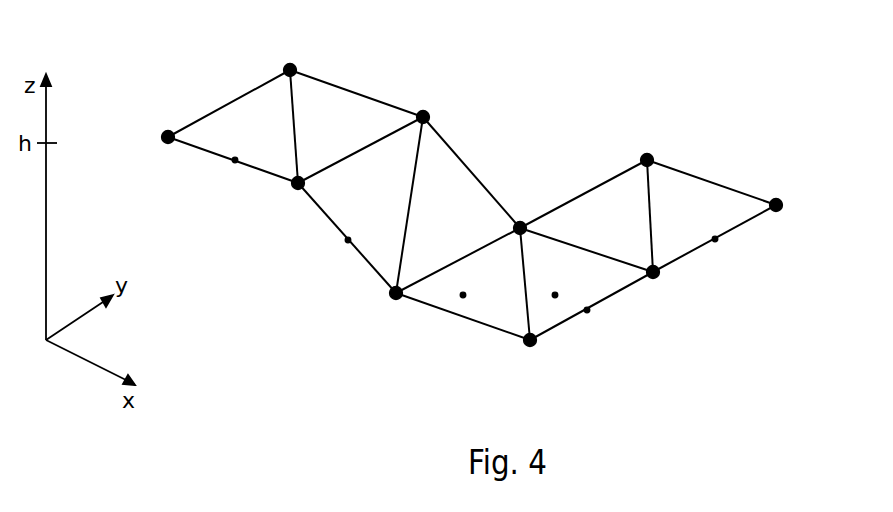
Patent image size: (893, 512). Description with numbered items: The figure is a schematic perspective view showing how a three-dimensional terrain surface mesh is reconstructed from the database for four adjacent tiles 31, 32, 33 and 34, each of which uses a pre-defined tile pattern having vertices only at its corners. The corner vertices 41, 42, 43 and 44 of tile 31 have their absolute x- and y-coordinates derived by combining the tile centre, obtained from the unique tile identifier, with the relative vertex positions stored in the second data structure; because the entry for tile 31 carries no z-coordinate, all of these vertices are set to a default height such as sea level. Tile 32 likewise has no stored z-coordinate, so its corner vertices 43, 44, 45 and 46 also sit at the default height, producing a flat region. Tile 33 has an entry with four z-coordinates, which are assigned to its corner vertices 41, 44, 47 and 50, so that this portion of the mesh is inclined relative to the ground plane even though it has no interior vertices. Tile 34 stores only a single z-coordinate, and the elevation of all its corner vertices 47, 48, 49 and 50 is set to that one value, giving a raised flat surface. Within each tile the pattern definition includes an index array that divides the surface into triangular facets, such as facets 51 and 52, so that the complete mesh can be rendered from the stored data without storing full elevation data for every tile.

The tile 31 is at (590, 313).
The tile 32 is at (718, 243).
The tile 33 is at (345, 244).
The tile 34 is at (233, 163).
The vertex 41 is at (391, 300).
The vertex 42 is at (525, 347).
The vertex 43 is at (658, 277).
The vertex 44 is at (522, 221).
The vertex 45 is at (781, 210).
The vertex 46 is at (650, 152).
The vertex 47 is at (427, 110).
The vertex 48 is at (293, 62).
The vertex 49 is at (163, 144).
The vertex 50 is at (292, 190).
The triangular facet 51 is at (460, 298).
The triangular facet 52 is at (555, 299).